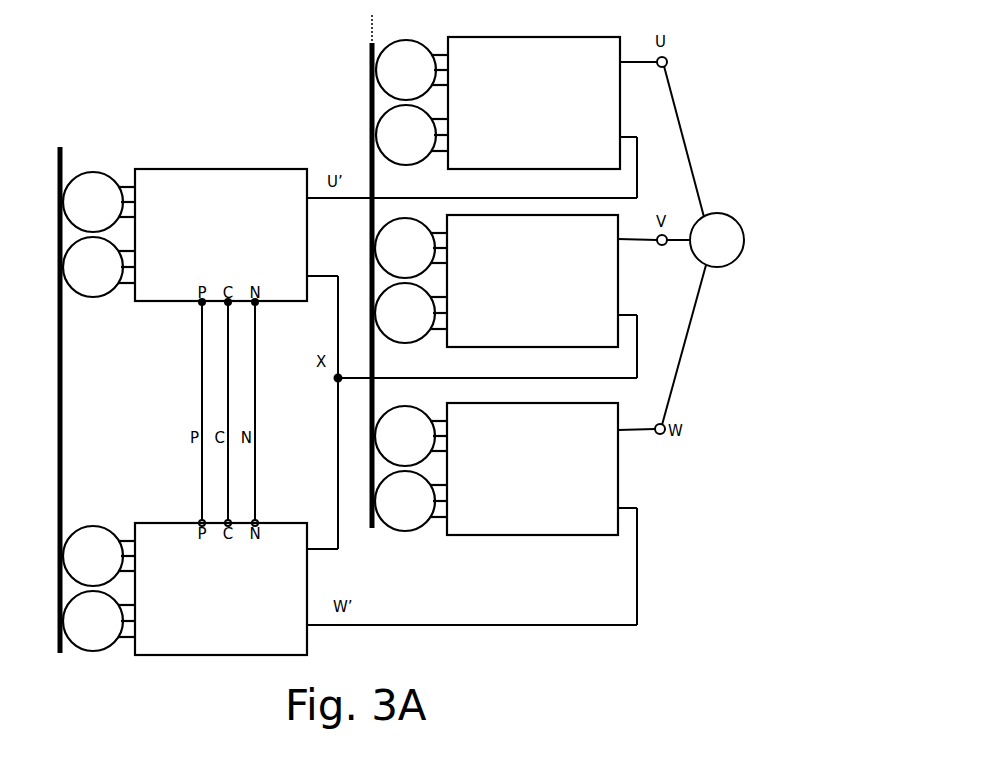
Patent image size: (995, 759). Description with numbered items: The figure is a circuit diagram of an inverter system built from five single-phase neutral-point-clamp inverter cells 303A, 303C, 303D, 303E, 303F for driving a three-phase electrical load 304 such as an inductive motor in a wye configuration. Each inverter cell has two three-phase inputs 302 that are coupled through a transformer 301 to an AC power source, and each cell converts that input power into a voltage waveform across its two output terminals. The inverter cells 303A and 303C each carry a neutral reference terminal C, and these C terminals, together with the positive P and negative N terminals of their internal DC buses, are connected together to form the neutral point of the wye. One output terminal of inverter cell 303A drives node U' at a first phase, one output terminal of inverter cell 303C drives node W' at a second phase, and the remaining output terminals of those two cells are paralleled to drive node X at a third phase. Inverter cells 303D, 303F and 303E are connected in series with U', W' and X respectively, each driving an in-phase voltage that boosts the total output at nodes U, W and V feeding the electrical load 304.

The transformer 301 is at (352, 98).
The 3-phase inputs 302 is at (249, 345).
The single-phase inverter cell 303A is at (250, 268).
The single-phase inverter cell 303C is at (250, 622).
The single-phase inverter cell 303D is at (563, 136).
The single-phase inverter cell 303E is at (562, 314).
The single-phase inverter cell 303F is at (562, 502).
The electrical load 304 is at (753, 263).